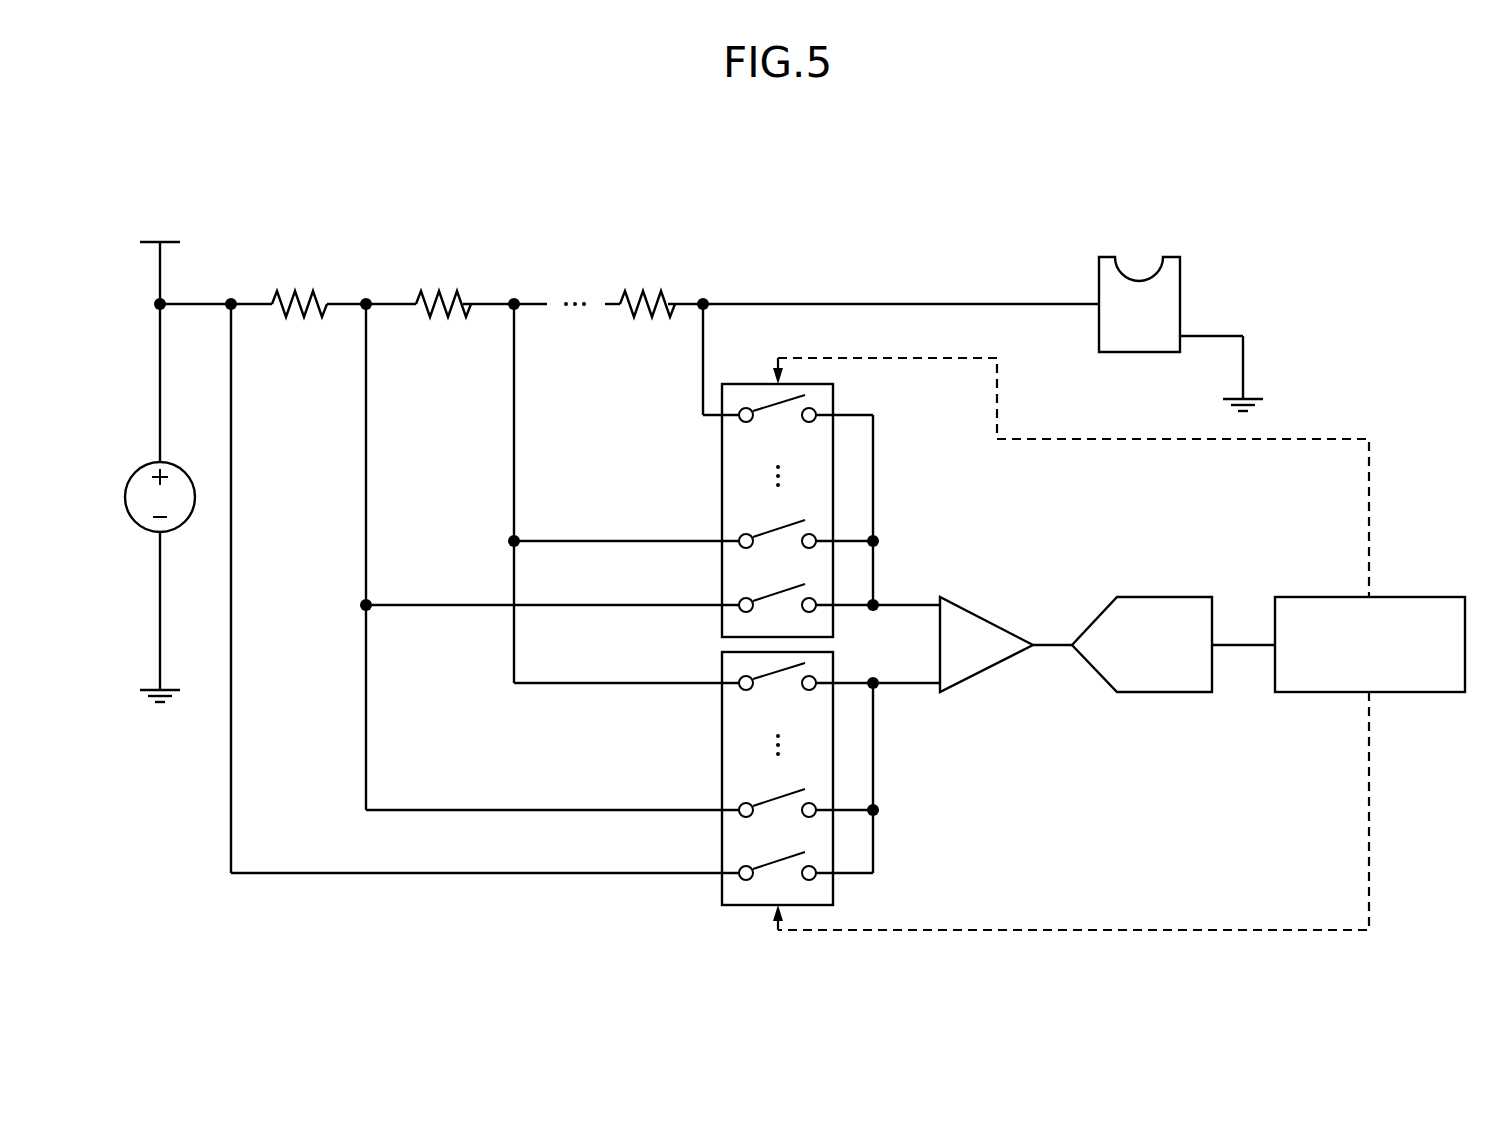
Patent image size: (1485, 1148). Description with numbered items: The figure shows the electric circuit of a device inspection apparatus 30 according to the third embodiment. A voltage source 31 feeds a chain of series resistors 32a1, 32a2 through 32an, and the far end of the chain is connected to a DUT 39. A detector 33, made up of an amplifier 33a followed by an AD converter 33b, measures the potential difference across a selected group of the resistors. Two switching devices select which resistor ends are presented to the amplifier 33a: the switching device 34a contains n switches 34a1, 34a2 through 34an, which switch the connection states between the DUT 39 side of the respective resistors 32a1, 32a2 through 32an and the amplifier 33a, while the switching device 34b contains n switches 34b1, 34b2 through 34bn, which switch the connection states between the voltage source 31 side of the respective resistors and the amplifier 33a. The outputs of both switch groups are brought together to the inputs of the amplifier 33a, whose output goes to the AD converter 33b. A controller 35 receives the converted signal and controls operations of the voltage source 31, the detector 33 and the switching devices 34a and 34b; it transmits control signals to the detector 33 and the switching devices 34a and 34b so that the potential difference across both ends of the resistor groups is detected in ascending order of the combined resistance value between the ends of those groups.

The device inspection apparatus 30 is at (414, 162).
The voltage source 31 is at (133, 470).
The resistor 32a1 is at (293, 292).
The resistor 32a2 is at (436, 292).
The resistor 32an is at (641, 292).
The detector 33 is at (1076, 659).
The amplifier 33a is at (988, 617).
The AD converter 33b is at (1167, 597).
The switching device 34a is at (762, 383).
The switch 34a1 is at (777, 594).
The switch 34a2 is at (777, 530).
The switch 34an is at (777, 413).
The switching device 34b is at (748, 906).
The switch 34b1 is at (777, 862).
The switch 34b2 is at (777, 799).
The switch 34bn is at (777, 681).
The controller 35 is at (1320, 597).
The DUT 39 is at (1140, 257).